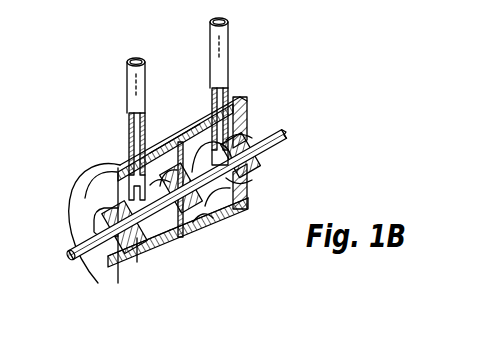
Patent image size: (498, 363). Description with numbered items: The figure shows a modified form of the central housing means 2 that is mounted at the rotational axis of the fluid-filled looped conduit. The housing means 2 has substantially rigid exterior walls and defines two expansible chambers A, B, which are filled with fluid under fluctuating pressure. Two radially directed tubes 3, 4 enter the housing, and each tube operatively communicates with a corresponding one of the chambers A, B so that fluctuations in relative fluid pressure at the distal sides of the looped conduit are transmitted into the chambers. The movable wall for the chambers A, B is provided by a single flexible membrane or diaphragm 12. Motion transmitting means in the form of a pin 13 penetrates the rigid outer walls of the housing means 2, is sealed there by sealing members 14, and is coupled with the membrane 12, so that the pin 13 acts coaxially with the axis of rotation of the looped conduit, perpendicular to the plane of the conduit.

The housing means 2 is at (179, 60).
The radially directed tube 3 is at (133, 90).
The radially directed tube 4 is at (226, 62).
The flexible membrane or diaphragm 12 is at (207, 118).
The pin 13 is at (262, 133).
The sealing members 14 is at (252, 173).
The first expansible chamber A is at (148, 272).
The second expansible chamber B is at (210, 215).